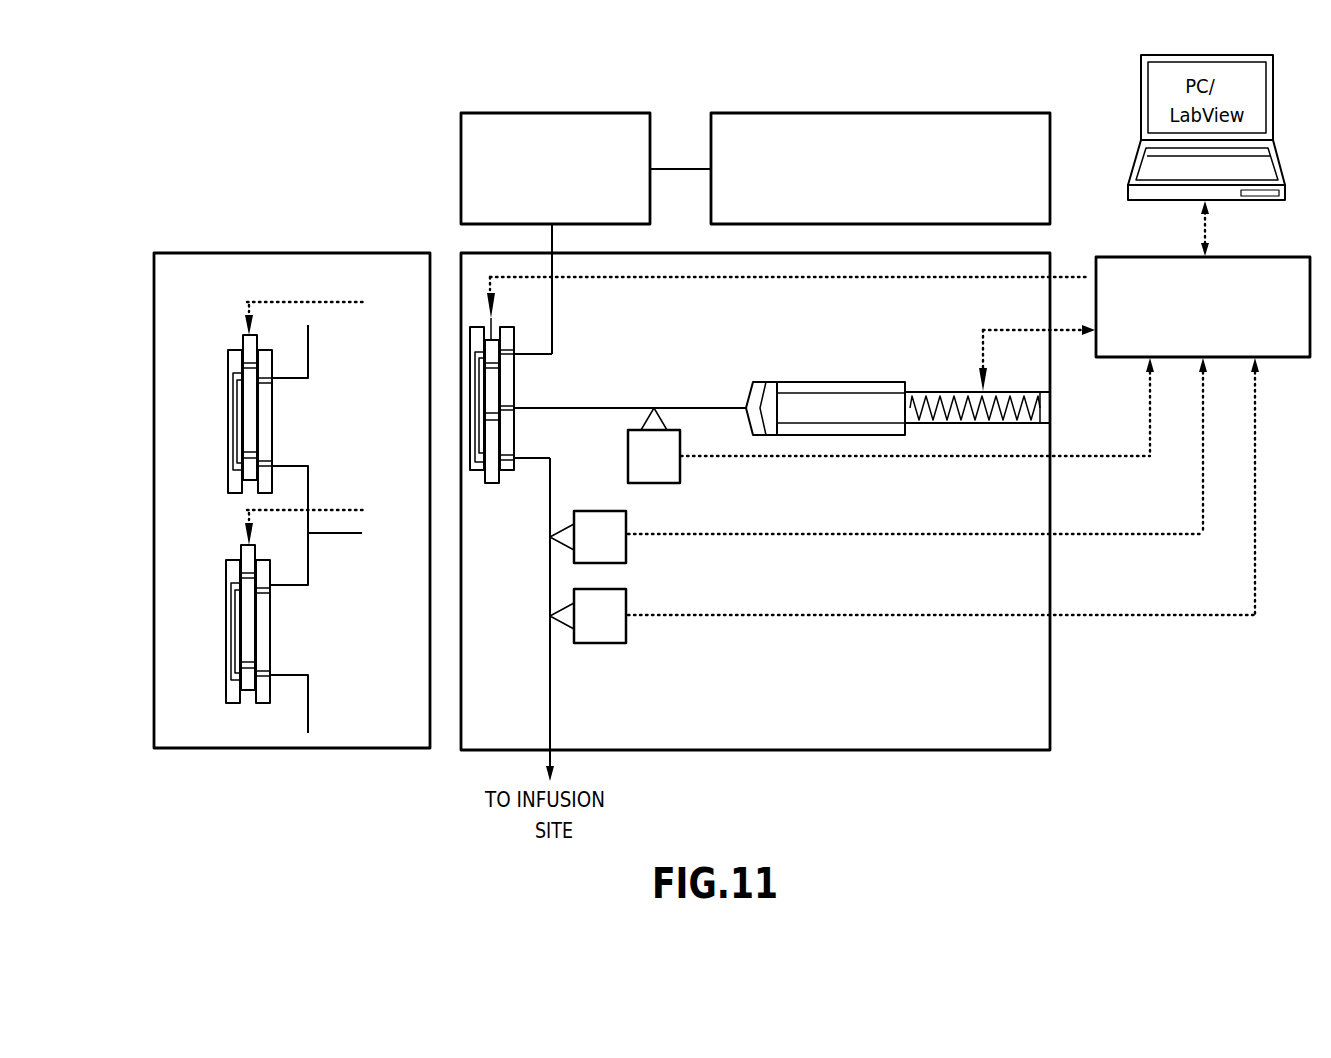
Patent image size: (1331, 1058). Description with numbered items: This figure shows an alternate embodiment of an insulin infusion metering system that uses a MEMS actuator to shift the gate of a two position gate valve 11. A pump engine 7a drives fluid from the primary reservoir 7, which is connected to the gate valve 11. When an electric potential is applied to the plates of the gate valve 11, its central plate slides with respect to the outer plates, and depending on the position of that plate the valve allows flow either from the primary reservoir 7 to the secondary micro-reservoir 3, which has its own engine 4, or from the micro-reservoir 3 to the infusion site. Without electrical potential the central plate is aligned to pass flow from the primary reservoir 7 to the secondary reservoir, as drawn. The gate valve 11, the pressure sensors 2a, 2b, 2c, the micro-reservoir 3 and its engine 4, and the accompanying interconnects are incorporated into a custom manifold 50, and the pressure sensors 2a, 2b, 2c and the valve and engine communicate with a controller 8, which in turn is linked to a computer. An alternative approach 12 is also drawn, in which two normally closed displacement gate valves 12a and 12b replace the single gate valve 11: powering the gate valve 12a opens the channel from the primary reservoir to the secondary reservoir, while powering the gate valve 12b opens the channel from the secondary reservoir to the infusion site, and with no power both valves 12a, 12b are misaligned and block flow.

The pressure sensor 2a is at (683, 470).
The pressure sensor 2b is at (598, 511).
The pressure sensor 2c is at (588, 645).
The micro-reservoir 3 is at (749, 390).
The engine 4 is at (1010, 393).
The primary reservoir 7 is at (1003, 113).
The pump engine 7a is at (548, 113).
The controller 8 is at (1290, 358).
The two position gate valve 11 is at (470, 308).
The alternative approach valve arrangement 12 is at (153, 537).
The N/C displacement gate valve 12a is at (243, 343).
The N/C displacement gate valve 12b is at (243, 552).
The custom manifold 50 is at (1052, 665).